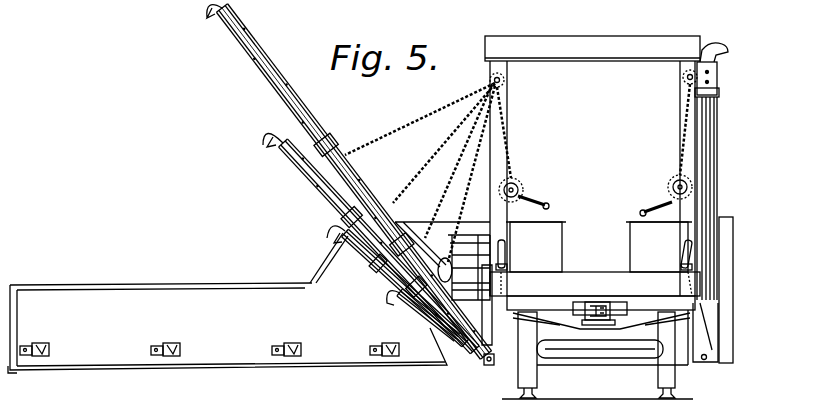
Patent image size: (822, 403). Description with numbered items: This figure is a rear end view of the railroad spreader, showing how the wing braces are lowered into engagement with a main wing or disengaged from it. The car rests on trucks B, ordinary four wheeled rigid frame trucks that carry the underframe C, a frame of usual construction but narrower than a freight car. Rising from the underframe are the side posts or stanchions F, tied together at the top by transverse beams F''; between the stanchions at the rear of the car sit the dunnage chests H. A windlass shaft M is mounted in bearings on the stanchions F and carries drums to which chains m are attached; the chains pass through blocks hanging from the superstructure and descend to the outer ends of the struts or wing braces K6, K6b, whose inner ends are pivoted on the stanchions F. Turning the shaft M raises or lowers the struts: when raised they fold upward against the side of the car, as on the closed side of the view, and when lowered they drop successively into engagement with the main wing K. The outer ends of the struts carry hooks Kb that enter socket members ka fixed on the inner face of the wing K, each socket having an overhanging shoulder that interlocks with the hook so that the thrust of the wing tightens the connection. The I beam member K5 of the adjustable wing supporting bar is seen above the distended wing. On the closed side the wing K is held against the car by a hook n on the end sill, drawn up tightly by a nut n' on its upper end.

The transverse beam F'' is at (592, 31).
The stanchion F is at (593, 178).
The windlass shaft M is at (514, 189).
The chain m is at (595, 200).
The dunnage chest H is at (630, 236).
The underframe C is at (598, 275).
The truck B is at (598, 347).
The nut n' is at (594, 268).
The hook n is at (582, 329).
The strut K6 is at (712, 160).
The chains and ladder sub-frame K6b is at (355, 200).
The main wing K is at (736, 208).
The socket member ka is at (41, 346).
The I beam member K5 is at (213, 20).
The hook Kb is at (272, 150).